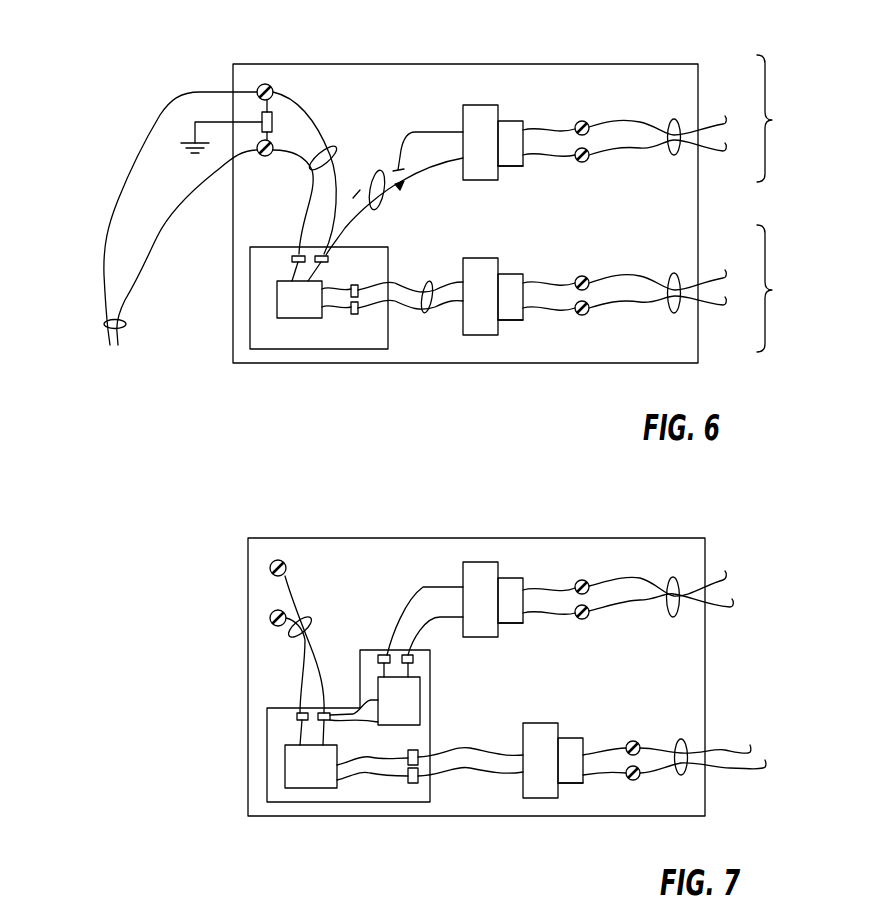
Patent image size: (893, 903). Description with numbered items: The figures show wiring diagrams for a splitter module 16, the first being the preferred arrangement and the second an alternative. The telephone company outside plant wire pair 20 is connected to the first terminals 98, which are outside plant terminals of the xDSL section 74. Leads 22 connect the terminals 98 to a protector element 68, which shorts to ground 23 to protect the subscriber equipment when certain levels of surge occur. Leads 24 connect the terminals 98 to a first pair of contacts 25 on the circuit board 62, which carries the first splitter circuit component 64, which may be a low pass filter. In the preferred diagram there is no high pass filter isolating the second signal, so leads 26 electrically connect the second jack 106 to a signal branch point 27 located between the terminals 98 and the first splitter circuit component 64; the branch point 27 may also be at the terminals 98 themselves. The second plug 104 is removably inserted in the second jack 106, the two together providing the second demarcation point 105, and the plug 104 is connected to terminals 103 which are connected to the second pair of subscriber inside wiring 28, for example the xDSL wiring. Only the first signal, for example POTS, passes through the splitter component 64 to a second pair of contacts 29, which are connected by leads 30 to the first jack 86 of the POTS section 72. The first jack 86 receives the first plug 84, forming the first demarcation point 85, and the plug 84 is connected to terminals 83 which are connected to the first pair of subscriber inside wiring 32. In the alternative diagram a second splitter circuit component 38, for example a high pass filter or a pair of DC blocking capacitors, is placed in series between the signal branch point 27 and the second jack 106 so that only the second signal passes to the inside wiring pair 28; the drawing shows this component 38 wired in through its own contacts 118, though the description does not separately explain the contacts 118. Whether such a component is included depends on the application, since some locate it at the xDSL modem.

In FIG. 6, the splitter module 16 is at (533, 400).
In FIG. 6, the telephone company outside plant wire pair 20 is at (128, 323).
In FIG. 6, the leads 22 is at (258, 118).
In FIG. 6, the ground 23 is at (238, 120).
In FIG. 6, the leads 24 is at (327, 150).
In FIG. 7, the leads 24 is at (308, 620).
In FIG. 6, the first pair of contacts 25 is at (290, 259).
In FIG. 7, the first pair of contacts 25 is at (297, 718).
In FIG. 6, the leads 26 is at (386, 210).
In FIG. 6, the signal branch point 27 is at (296, 253).
In FIG. 7, the signal branch point 27 is at (292, 711).
In FIG. 6, the second pair of inside subscriber wiring 28 is at (673, 119).
In FIG. 7, the second pair of inside subscriber wiring 28 is at (680, 580).
In FIG. 6, the second pair of contacts 29 is at (360, 288).
In FIG. 7, the second pair of contacts 29 is at (430, 765).
In FIG. 6, the leads 30 is at (430, 280).
In FIG. 6, the first pair of inside subscriber wiring 32 is at (674, 313).
In FIG. 7, the first pair of inside subscriber wiring 32 is at (680, 738).
In FIG. 7, the second splitter circuit component 38 is at (417, 718).
In FIG. 6, the circuit board 62 is at (310, 343).
In FIG. 7, the circuit board 62 is at (380, 797).
In FIG. 6, the first splitter circuit component 64 is at (290, 318).
In FIG. 7, the first splitter circuit component 64 is at (322, 780).
In FIG. 6, the protector element 68 is at (273, 127).
In FIG. 6, the POTS section 72 is at (784, 288).
In FIG. 6, the xDSL section 74 is at (784, 118).
In FIG. 6, the terminals 83 is at (581, 276).
In FIG. 7, the terminals 83 is at (634, 740).
In FIG. 6, the first plug 84 is at (511, 274).
In FIG. 7, the first plug 84 is at (570, 738).
In FIG. 6, the first demarcation point 85 is at (504, 321).
In FIG. 7, the first demarcation point 85 is at (558, 798).
In FIG. 6, the first jack 86 is at (470, 328).
In FIG. 7, the first jack 86 is at (532, 790).
In FIG. 6, the first terminals 98 is at (267, 84).
In FIG. 7, the first terminals 98 is at (280, 560).
In FIG. 6, the terminals 103 is at (582, 121).
In FIG. 7, the terminals 103 is at (582, 580).
In FIG. 6, the second plug 104 is at (517, 121).
In FIG. 7, the second plug 104 is at (511, 578).
In FIG. 6, the second demarcation point 105 is at (504, 167).
In FIG. 7, the second demarcation point 105 is at (498, 632).
In FIG. 6, the second jack 106 is at (477, 105).
In FIG. 7, the second jack 106 is at (483, 562).
In FIG. 7, the high pass filter terminals 118 is at (382, 655).